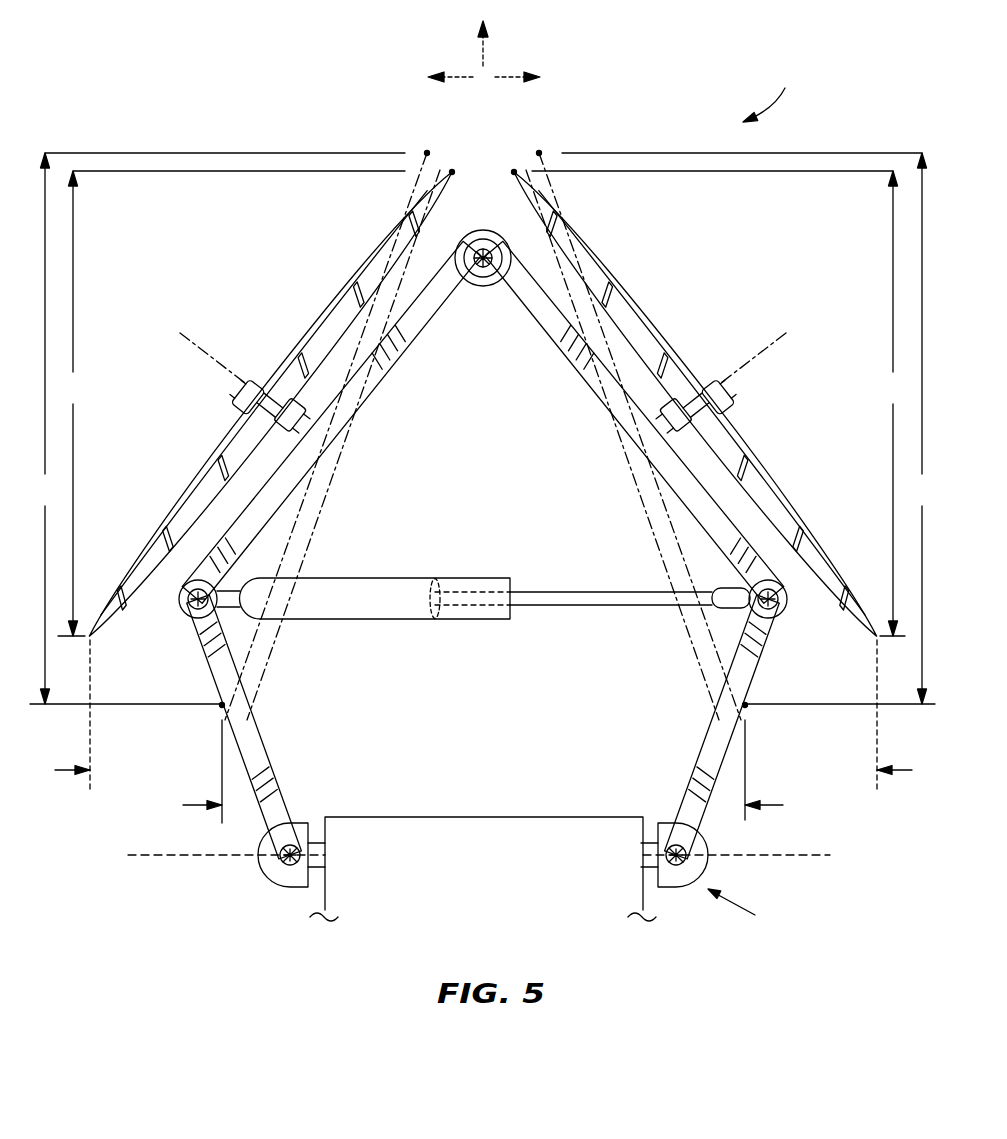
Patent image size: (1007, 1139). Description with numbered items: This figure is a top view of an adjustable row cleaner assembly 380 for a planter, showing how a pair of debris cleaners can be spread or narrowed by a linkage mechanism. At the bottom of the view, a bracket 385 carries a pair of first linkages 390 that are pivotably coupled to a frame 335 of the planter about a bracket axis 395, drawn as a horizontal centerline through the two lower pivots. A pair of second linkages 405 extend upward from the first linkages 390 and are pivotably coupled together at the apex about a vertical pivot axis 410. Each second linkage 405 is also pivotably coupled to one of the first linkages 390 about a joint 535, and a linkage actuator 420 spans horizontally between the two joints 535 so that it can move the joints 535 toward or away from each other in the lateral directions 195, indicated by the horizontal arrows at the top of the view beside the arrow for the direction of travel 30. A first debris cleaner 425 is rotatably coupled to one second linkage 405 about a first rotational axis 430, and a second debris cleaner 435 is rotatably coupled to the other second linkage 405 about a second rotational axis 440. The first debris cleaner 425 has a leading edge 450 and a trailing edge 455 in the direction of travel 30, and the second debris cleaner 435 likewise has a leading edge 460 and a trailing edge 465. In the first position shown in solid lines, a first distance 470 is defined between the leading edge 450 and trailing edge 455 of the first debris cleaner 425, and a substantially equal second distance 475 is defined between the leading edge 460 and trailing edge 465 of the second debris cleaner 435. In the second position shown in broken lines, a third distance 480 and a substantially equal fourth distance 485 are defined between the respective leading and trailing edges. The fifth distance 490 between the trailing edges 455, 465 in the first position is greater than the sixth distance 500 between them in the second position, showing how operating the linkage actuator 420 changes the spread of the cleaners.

The direction of travel 30 is at (485, 58).
The lateral directions 195 is at (452, 76).
The adjustable row cleaner assembly 380 is at (783, 93).
The leading edge 460 is at (427, 153).
The leading edge 450 is at (539, 153).
The second debris cleaner 435 is at (325, 322).
The first debris cleaner 425 is at (641, 322).
The second rotational axis 440 is at (208, 360).
The first rotational axis 430 is at (758, 360).
The second linkages 405 is at (420, 328).
The vertical pivot axis 410 is at (483, 230).
The joint 535 is at (185, 590).
The linkage actuator 420 is at (425, 619).
The first linkages 390 is at (265, 742).
The bracket 385 is at (525, 881).
The frame 335 is at (495, 817).
The bracket axis 395 is at (785, 858).
The trailing edge 465 is at (147, 636).
The trailing edge 455 is at (819, 636).
The fourth distance 485 is at (216, 428).
The second distance 475 is at (230, 403).
The third distance 480 is at (751, 428).
The first distance 470 is at (721, 403).
The sixth distance 500 is at (770, 804).
The fifth distance 490 is at (900, 772).